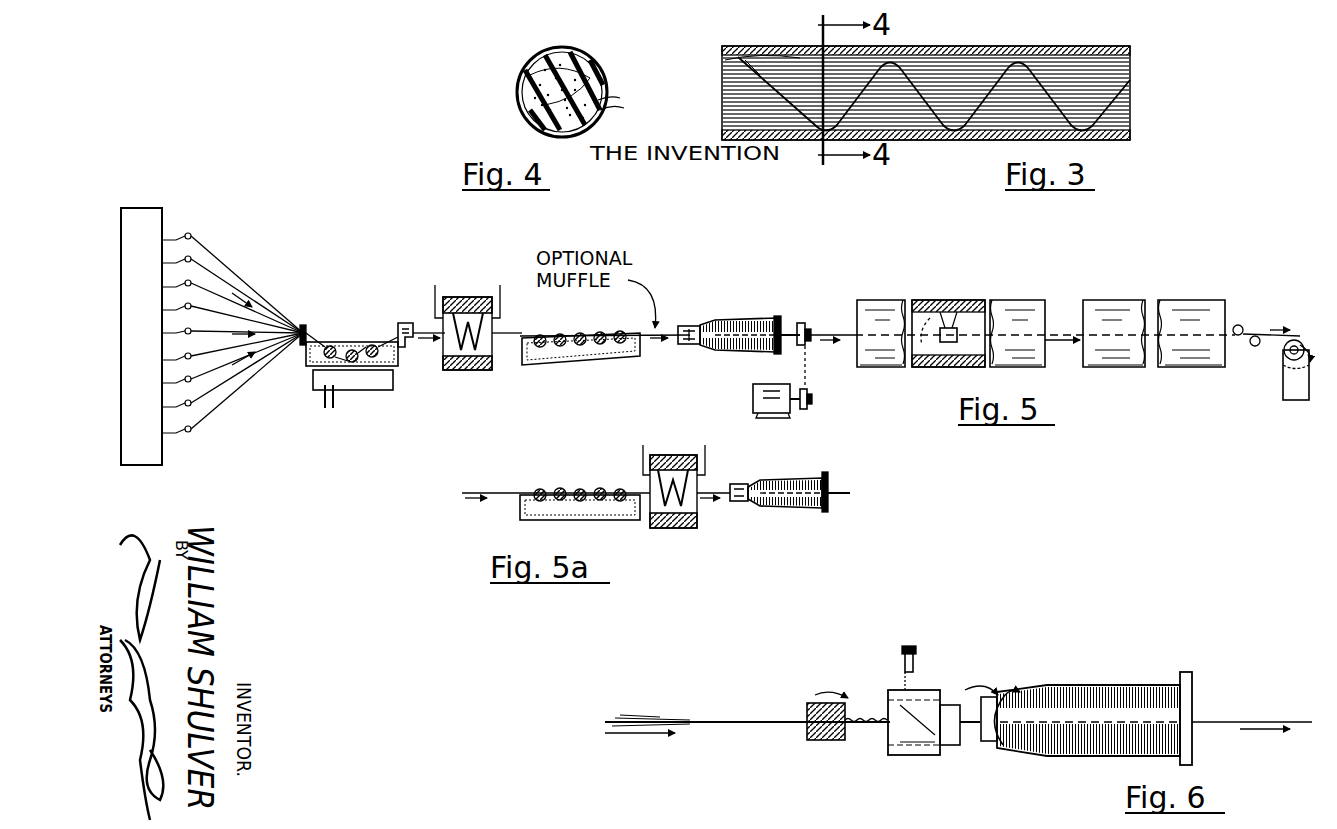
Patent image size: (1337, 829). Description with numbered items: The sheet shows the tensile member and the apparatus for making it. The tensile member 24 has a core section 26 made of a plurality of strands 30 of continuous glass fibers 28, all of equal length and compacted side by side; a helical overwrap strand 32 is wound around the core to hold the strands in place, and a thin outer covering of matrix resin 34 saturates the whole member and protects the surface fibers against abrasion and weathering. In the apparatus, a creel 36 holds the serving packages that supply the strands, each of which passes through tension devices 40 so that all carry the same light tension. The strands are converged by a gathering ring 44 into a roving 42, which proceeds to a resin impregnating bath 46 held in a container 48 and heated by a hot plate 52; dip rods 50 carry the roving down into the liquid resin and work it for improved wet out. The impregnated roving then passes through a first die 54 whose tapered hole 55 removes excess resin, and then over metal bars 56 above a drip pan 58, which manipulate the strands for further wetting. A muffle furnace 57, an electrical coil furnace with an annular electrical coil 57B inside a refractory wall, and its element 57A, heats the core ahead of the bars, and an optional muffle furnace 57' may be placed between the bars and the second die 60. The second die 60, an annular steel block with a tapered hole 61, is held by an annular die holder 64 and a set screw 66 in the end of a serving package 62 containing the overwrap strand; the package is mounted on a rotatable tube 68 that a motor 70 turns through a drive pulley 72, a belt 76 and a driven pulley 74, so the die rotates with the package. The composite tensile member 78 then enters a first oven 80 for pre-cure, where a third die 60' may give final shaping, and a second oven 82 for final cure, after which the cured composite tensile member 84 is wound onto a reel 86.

In FIG. 4, the tensile member 24 is at (590, 48).
In FIG. 3, the tensile member 24 is at (1120, 45).
In FIG. 3, the core section 26 is at (1135, 75).
In FIG. 5, the core section 26 is at (635, 332).
In FIG. 5A, the core section 26 is at (497, 490).
In FIG. 6, the core section 26 is at (665, 722).
In FIG. 4, the continuous glass fibers 28 is at (627, 110).
In FIG. 3, the continuous glass fibers 28 is at (1122, 78).
In FIG. 4, the strands 30 is at (520, 82).
In FIG. 3, the strands 30 is at (1080, 75).
In FIG. 5, the strands 30 is at (222, 270).
In FIG. 4, the helical overwrap strand 32 is at (540, 72).
In FIG. 3, the helical overwrap strand 32 is at (920, 55).
In FIG. 5, the helical overwrap strand 32 is at (752, 335).
In FIG. 5A, the helical overwrap strand 32 is at (805, 488).
In FIG. 6, the helical overwrap strand 32 is at (1110, 710).
In FIG. 4, the matrix resin 34 is at (565, 52).
In FIG. 3, the matrix resin 34 is at (968, 55).
In FIG. 5, the creel 36 is at (152, 205).
In FIG. 5, the tension devices 40 is at (185, 240).
In FIG. 5, the roving 42 is at (308, 340).
In FIG. 5, the gathering ring 44 is at (303, 322).
In FIG. 5, the resin impregnating bath 46 is at (372, 345).
In FIG. 5, the container 48 is at (396, 368).
In FIG. 5, the dip rods 50 is at (332, 346).
In FIG. 5, the hot plate 52 is at (313, 380).
In FIG. 5, the first die 54 is at (415, 325).
In FIG. 5, the tapered hole 55 is at (398, 330).
In FIG. 5, the metal bars 56 is at (582, 332).
In FIG. 5A, the metal bars 56 is at (598, 488).
In FIG. 5, the muffle furnace 57 is at (468, 311).
In FIG. 5, the heater lower element 57A is at (490, 370).
In FIG. 5, the electrical coil 57B is at (453, 370).
In FIG. 5A, the muffle furnace 57' is at (674, 470).
In FIG. 5, the drip pan 58 is at (595, 356).
In FIG. 5A, the drip pan 58 is at (520, 508).
In FIG. 5, the second die 60 is at (701, 326).
In FIG. 5A, the second die 60 is at (741, 477).
In FIG. 6, the second die 60 is at (809, 700).
In FIG. 5, the third die 60' is at (948, 317).
In FIG. 6, the tapered hole 61 is at (900, 745).
In FIG. 5, the serving package 62 is at (738, 348).
In FIG. 5A, the serving package 62 is at (790, 508).
In FIG. 6, the serving package 62 is at (1112, 685).
In FIG. 6, the annular die holder 64 is at (892, 690).
In FIG. 6, the set screw 66 is at (902, 655).
In FIG. 5, the rotatable tube 68 is at (783, 335).
In FIG. 5, the motor 70 is at (753, 395).
In FIG. 5, the drive pulley 72 is at (812, 403).
In FIG. 5, the driven pulley 74 is at (810, 350).
In FIG. 5, the belt 76 is at (805, 365).
In FIG. 5, the composite tensile member 78 is at (805, 330).
In FIG. 6, the composite tensile member 78 is at (1255, 720).
In FIG. 5, the first oven 80 is at (1018, 300).
In FIG. 5, the second oven 82 is at (1215, 300).
In FIG. 5, the cured composite tensile member 84 is at (1230, 325).
In FIG. 5, the reel 86 is at (1283, 365).